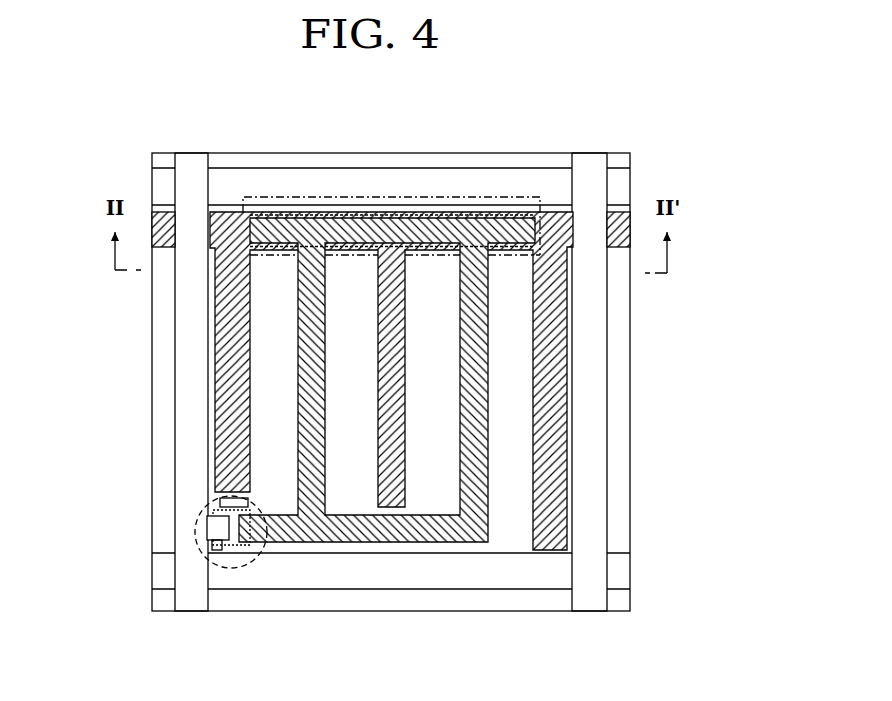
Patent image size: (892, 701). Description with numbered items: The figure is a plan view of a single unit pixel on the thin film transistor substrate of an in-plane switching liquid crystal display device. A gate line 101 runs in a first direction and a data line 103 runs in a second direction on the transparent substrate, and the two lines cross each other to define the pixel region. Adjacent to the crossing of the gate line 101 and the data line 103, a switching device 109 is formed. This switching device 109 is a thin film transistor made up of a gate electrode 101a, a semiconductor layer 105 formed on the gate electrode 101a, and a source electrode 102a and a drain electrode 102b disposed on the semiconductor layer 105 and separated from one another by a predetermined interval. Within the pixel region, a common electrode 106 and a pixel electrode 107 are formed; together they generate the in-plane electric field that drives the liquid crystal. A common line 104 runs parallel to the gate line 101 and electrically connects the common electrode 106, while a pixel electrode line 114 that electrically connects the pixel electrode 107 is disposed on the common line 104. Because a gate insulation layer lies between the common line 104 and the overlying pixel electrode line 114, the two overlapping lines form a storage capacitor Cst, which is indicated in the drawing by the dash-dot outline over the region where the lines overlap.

The gate line 101 is at (460, 577).
The gate electrode 101a is at (218, 494).
The source electrode 102a is at (215, 520).
The drain electrode 102b is at (255, 552).
The data line 103 is at (185, 598).
The common line 104 is at (165, 185).
The semiconductor layer 105 is at (232, 568).
The common electrode 106 is at (238, 270).
The pixel electrode 107 is at (308, 267).
The switching device 109 is at (198, 552).
The pixel electrode line 114 is at (515, 232).
The storage capacitor Cst is at (430, 197).